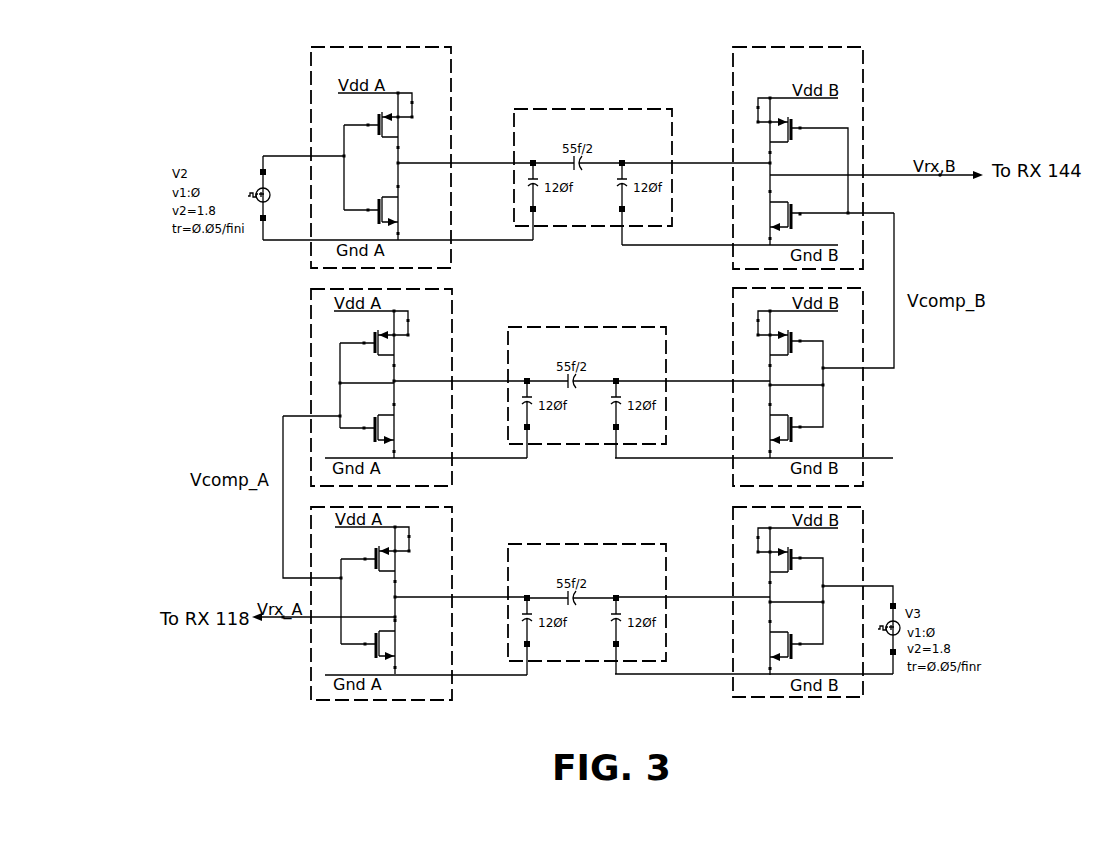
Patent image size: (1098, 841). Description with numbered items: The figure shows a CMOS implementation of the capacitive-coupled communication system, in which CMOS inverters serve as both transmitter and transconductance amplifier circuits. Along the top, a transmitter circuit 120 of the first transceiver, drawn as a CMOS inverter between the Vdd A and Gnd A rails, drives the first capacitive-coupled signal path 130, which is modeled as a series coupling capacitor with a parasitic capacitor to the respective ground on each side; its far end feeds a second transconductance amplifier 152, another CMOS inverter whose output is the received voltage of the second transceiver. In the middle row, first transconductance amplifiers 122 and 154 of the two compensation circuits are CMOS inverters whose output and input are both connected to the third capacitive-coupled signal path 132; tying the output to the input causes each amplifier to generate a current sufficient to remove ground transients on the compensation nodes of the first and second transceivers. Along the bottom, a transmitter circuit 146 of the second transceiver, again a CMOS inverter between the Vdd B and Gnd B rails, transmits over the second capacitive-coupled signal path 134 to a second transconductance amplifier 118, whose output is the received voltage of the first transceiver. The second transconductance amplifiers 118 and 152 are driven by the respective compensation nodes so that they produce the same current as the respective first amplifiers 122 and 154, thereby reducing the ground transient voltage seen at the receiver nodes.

The transmitter circuit 120 is at (315, 47).
The first capacitive-coupled signal path 130 is at (581, 107).
The second transconductance amplifier 152 is at (738, 47).
The first transconductance amplifier 122 is at (452, 472).
The third capacitive-coupled signal path 132 is at (580, 327).
The first transconductance amplifier 154 is at (863, 477).
The second transconductance amplifier 118 is at (452, 692).
The second capacitive-coupled signal path 134 is at (577, 542).
The transmitter circuit 146 is at (737, 698).